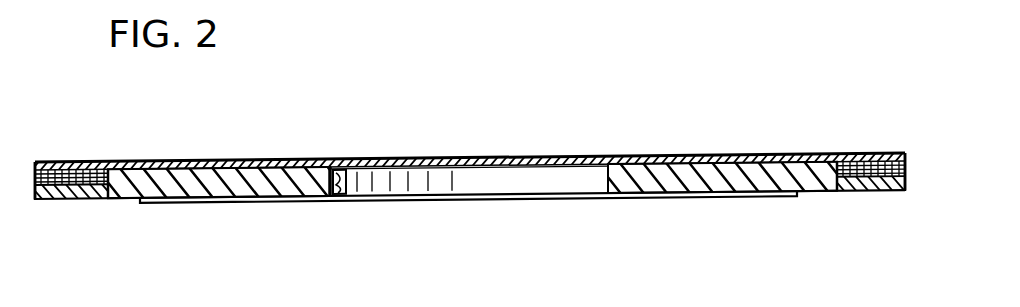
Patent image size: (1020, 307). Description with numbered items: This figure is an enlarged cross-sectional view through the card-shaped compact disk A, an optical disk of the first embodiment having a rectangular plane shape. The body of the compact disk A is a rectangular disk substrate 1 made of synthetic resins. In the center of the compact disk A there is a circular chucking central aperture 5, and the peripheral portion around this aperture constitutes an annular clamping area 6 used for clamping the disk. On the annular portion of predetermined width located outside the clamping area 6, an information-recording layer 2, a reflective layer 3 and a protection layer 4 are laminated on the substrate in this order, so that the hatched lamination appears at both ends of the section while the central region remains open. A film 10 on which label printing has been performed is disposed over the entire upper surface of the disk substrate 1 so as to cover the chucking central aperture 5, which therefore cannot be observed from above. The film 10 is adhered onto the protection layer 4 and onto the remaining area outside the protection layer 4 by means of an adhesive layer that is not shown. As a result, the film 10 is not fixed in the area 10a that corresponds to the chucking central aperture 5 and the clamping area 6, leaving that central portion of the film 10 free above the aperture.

The disk substrate 1 is at (55, 205).
The information-recording layer 2 is at (78, 207).
The reflective layer 3 is at (120, 203).
The protection layer 4 is at (90, 165).
The chucking central aperture 5 is at (345, 208).
The clamping area 6 is at (297, 205).
The film 10 is at (270, 158).
The area corresponding to the chucking central aperture and the clamping area 10a is at (577, 117).
The compact disk A is at (652, 145).